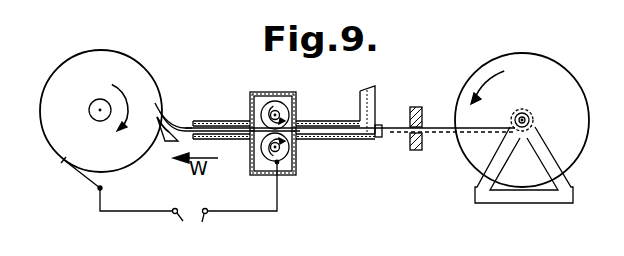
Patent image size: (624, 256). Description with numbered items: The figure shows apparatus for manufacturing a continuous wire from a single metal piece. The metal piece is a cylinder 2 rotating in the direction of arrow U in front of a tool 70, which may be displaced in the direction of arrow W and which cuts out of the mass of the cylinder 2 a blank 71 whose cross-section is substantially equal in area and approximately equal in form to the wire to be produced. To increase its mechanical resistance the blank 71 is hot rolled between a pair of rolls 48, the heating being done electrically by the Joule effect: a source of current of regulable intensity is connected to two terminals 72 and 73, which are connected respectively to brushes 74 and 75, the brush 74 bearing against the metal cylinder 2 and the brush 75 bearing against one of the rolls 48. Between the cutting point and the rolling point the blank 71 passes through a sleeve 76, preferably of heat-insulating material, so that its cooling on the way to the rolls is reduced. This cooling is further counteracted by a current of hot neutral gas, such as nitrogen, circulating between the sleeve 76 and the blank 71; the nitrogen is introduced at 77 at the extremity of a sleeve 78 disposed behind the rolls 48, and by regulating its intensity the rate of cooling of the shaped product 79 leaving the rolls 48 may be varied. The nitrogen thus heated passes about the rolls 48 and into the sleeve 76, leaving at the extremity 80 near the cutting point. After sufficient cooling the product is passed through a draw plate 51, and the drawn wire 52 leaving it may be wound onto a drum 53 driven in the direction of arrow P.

The metal cylinder 2 is at (100, 63).
The rolls 48 is at (292, 129).
The draw plate 51 is at (415, 152).
The drawn wire 52 is at (438, 134).
The drum 53 is at (486, 62).
The tool 70 is at (164, 144).
The blank 71 is at (160, 113).
The terminal 72 is at (142, 214).
The terminal 73 is at (239, 202).
The brush 74 is at (84, 181).
The brush 75 is at (268, 161).
The sleeve 76 is at (217, 139).
The nitrogen inlet 77 is at (370, 93).
The sleeve 78 is at (336, 140).
The shaped product 79 is at (314, 139).
The extremity of sleeve 80 is at (186, 121).